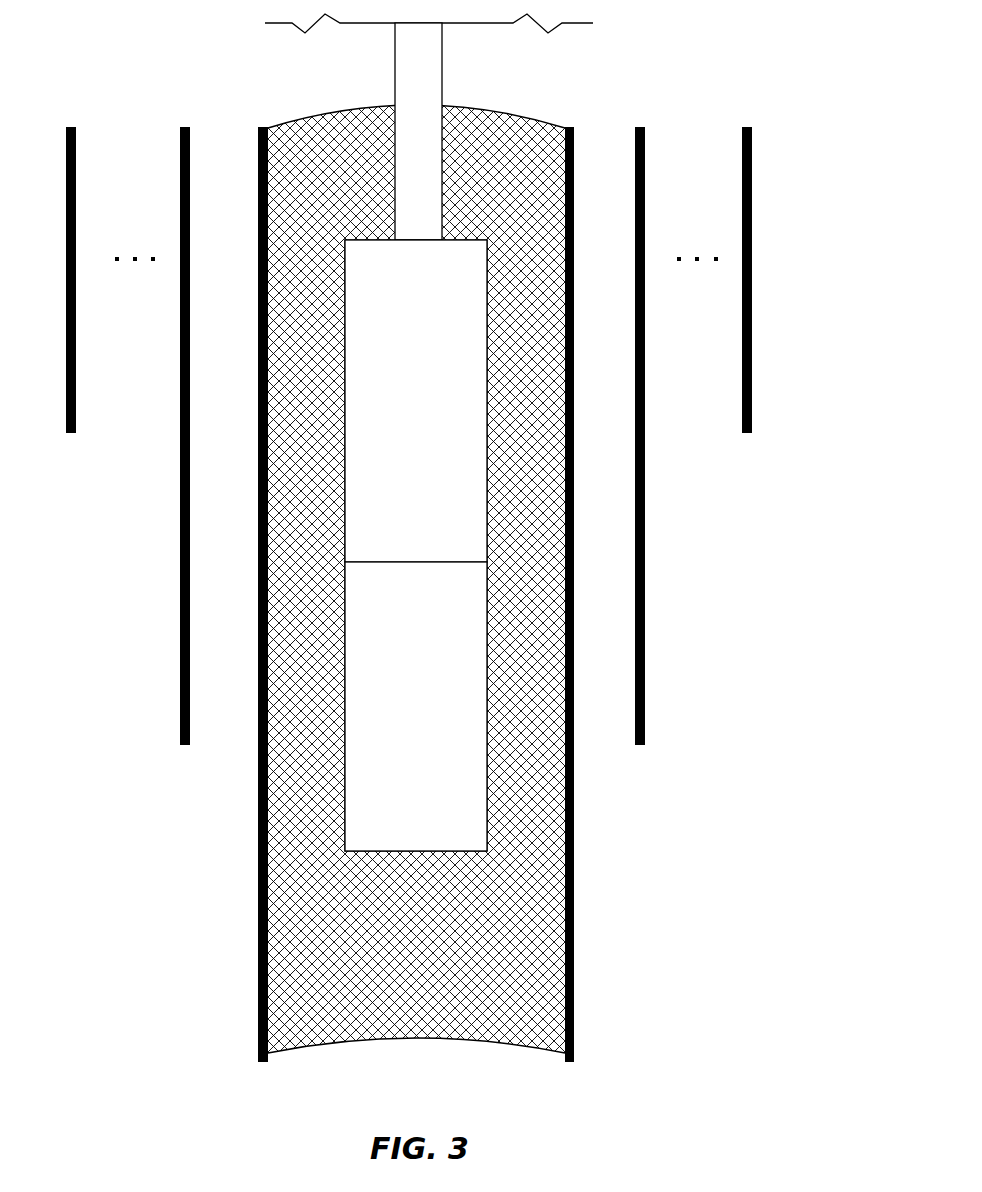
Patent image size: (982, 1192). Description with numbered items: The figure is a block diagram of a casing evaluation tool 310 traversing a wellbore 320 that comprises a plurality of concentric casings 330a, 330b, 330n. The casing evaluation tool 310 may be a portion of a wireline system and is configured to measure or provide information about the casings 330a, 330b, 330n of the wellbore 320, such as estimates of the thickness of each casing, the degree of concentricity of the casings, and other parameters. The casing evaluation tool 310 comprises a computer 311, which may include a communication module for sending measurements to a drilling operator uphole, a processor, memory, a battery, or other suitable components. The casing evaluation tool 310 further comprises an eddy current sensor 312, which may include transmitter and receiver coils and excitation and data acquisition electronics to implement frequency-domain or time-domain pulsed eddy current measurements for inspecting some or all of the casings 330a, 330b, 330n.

The casing evaluation tool 310 is at (464, 437).
The computer 311 is at (398, 415).
The eddy current (EC) sensor 312 is at (398, 730).
The wellbore 320 is at (306, 951).
The casing 330a is at (578, 861).
The casing 330b is at (649, 693).
The casing 330n is at (756, 364).